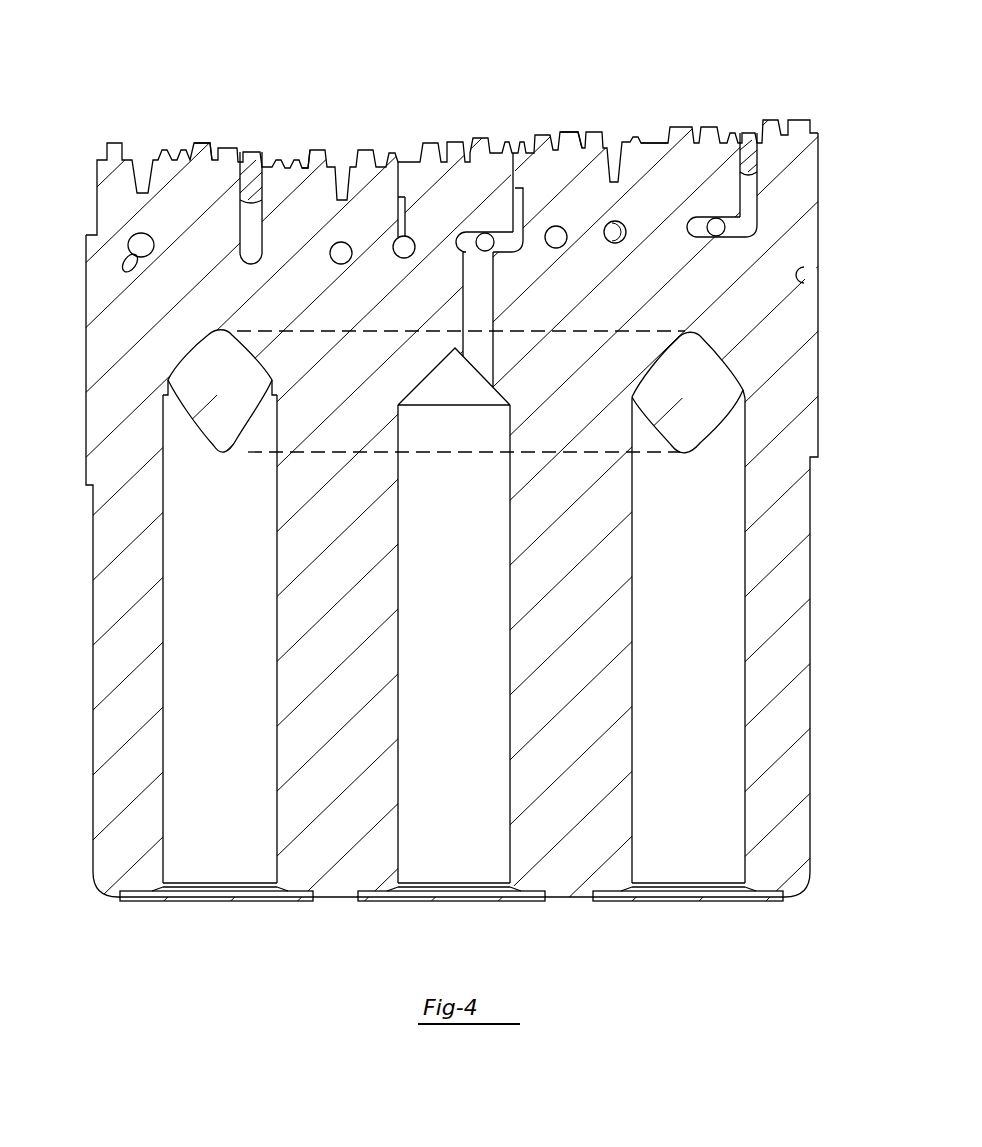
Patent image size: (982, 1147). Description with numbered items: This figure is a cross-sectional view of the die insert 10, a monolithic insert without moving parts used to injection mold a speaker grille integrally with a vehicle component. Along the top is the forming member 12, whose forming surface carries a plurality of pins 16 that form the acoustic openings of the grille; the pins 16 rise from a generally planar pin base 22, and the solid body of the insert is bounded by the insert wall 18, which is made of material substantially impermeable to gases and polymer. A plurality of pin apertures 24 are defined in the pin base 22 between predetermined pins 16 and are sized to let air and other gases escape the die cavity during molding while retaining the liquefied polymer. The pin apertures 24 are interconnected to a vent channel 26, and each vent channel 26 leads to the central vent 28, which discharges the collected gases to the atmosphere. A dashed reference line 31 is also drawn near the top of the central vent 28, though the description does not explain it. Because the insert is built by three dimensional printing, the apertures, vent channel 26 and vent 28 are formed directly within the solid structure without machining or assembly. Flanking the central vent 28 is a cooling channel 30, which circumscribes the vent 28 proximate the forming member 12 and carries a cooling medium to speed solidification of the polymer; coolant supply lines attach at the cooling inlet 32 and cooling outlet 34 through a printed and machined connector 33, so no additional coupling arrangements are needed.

The die insert 10 is at (130, 68).
The forming member 12 is at (816, 158).
The pins 16 is at (205, 143).
The insert wall 18 is at (818, 579).
The pin base 22 is at (302, 162).
The pin apertures 24 is at (398, 157).
The vent channel 26 is at (480, 311).
The central vent 28 is at (475, 631).
The cooling channel 30 is at (242, 631).
The dashed line 31 is at (250, 329).
The cooling inlet 32 is at (193, 918).
The connector 33 is at (278, 898).
The cooling outlet 34 is at (698, 920).